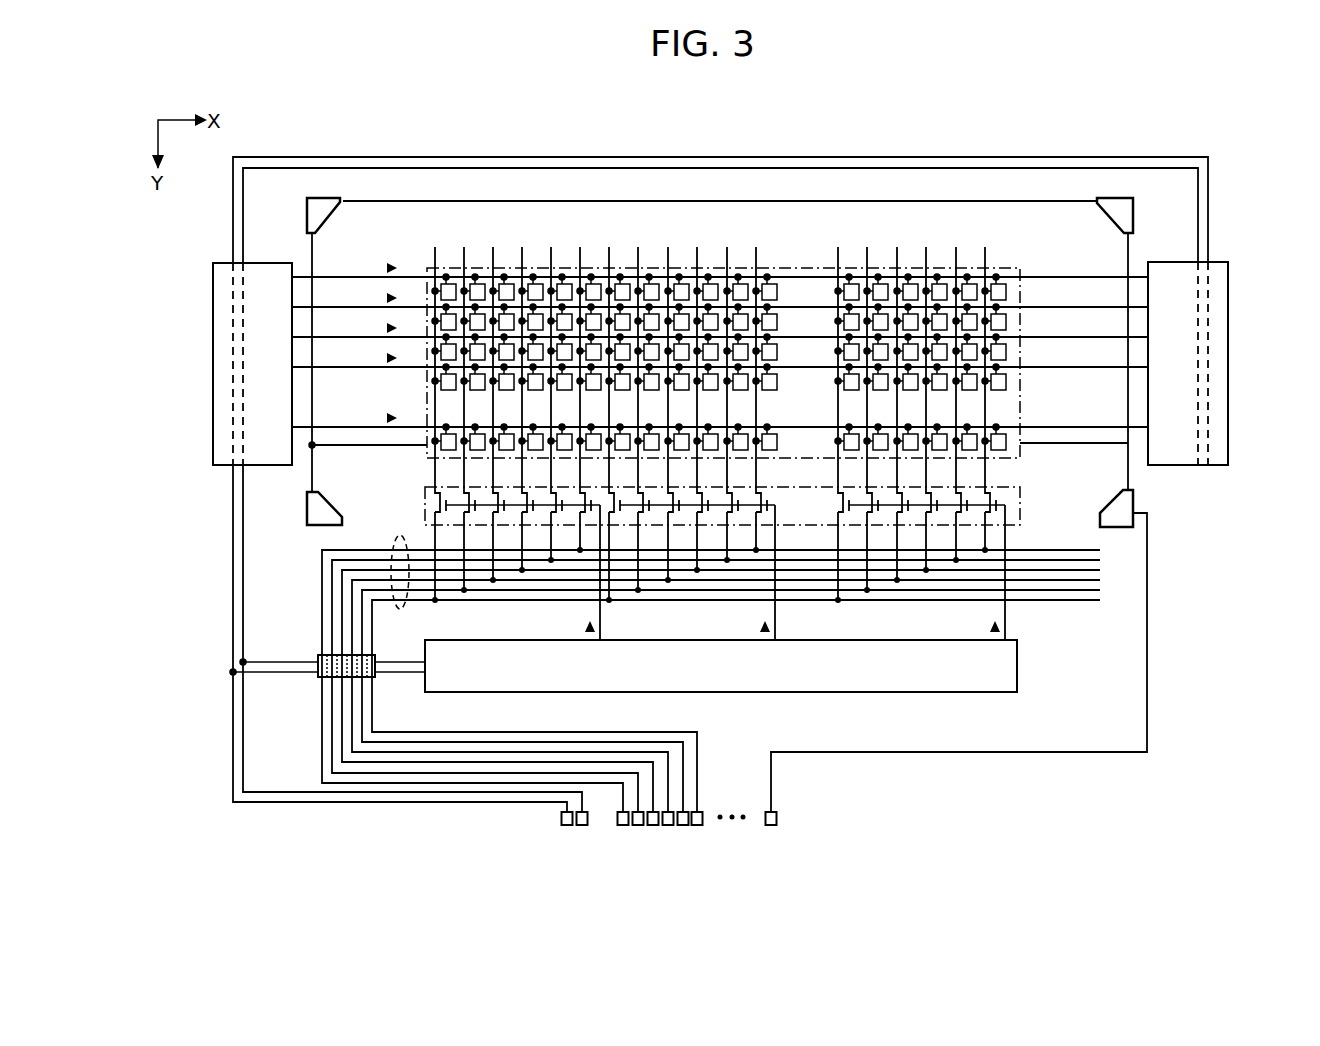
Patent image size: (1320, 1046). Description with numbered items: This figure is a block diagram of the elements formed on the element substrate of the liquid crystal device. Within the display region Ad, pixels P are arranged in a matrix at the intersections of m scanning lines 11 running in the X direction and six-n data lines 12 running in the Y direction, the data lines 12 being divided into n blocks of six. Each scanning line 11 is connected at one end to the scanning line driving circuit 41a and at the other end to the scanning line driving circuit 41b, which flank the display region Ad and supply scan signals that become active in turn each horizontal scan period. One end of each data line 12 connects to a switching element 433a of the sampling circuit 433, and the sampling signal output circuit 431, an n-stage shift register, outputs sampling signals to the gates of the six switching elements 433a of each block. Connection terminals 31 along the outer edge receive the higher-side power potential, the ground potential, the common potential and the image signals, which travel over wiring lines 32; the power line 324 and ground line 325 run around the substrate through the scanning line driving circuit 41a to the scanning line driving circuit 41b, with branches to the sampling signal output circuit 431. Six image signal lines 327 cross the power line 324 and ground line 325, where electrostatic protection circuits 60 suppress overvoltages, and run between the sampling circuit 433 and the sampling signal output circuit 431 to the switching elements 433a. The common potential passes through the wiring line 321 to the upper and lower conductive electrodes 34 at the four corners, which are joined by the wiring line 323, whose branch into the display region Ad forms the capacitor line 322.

The scanning line 11 is at (1046, 277).
The data line 12 is at (435, 250).
The connection terminal 31 is at (560, 818).
The wiring line 32 is at (636, 851).
The upper and lower conductive electrode 34 is at (306, 214).
The scanning line driving circuit 41a is at (213, 467).
The scanning line driving circuit 41b is at (1229, 436).
The electrostatic protection circuit 60 is at (314, 648).
The wiring line 321 is at (1001, 754).
The capacitor line 322 is at (364, 445).
The wiring line 323 is at (662, 202).
The power line 324 is at (244, 748).
The ground line 325 is at (232, 720).
The image signal line 327 is at (404, 608).
The sampling signal output circuit 431 is at (547, 692).
The sampling circuit 433 is at (402, 548).
The switching element 433a is at (427, 503).
The display region Ad is at (720, 408).
The pixel P is at (783, 319).